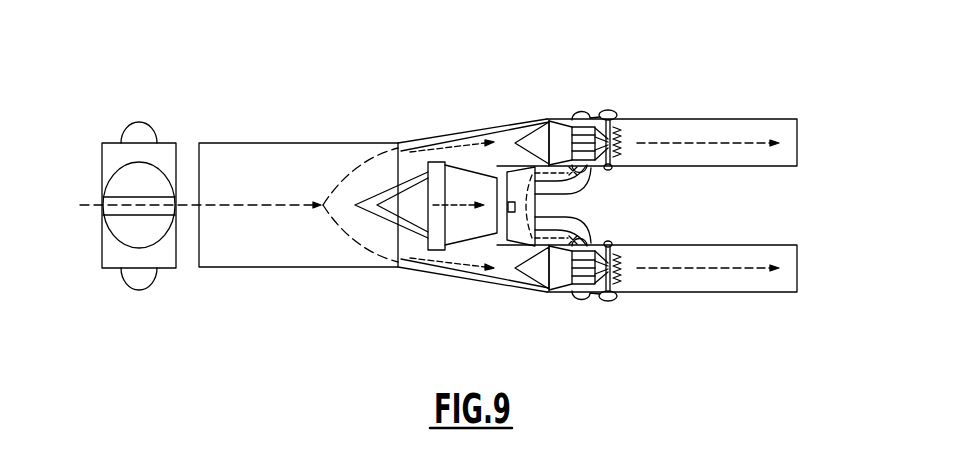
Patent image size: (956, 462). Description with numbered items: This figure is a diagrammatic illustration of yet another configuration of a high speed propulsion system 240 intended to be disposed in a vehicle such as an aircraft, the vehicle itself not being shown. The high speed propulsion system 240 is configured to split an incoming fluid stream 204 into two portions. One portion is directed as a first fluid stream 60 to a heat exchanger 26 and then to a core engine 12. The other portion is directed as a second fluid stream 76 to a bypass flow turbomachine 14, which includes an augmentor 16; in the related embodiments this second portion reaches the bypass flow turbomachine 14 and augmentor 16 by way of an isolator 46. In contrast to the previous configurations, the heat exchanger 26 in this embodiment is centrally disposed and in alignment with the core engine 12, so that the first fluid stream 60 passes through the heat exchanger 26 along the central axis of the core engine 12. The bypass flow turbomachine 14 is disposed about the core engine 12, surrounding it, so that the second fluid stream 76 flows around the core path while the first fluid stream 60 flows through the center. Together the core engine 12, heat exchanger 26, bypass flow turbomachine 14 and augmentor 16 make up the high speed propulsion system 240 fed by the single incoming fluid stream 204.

The incoming fluid stream 204 is at (252, 205).
The isolator 46 is at (292, 268).
The heat exchanger 26 is at (425, 177).
The second fluid stream 76 is at (423, 150).
The first fluid stream 60 is at (410, 208).
The core engine 12 is at (532, 113).
The high speed propulsion system 240 is at (752, 112).
The augmentor 16 is at (795, 240).
The bypass flow turbomachine 14 is at (522, 297).